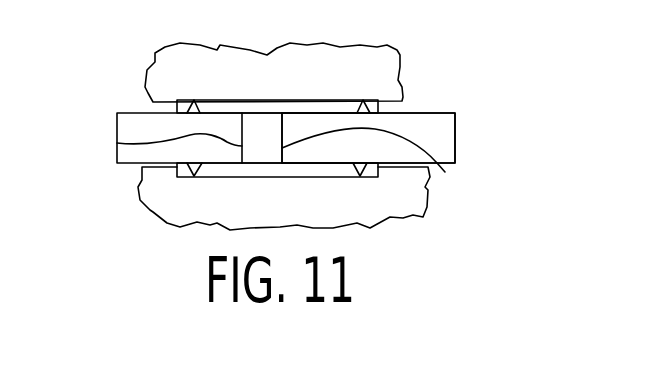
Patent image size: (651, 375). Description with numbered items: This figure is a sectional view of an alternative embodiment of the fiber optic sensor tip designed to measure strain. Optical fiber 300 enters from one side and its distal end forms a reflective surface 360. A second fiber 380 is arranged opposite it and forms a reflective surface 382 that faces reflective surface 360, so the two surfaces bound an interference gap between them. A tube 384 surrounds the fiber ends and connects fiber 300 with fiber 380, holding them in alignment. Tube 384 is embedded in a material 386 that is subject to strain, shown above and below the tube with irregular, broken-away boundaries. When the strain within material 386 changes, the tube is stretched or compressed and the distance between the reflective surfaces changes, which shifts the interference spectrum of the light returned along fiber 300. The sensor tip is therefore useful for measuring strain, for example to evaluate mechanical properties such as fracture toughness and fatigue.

The optical fiber 300 is at (432, 118).
The reflective surface 360 is at (383, 160).
The fiber 380 is at (131, 120).
The reflective surface 382 is at (117, 142).
The tube 384 is at (378, 109).
The material 386 is at (377, 60).